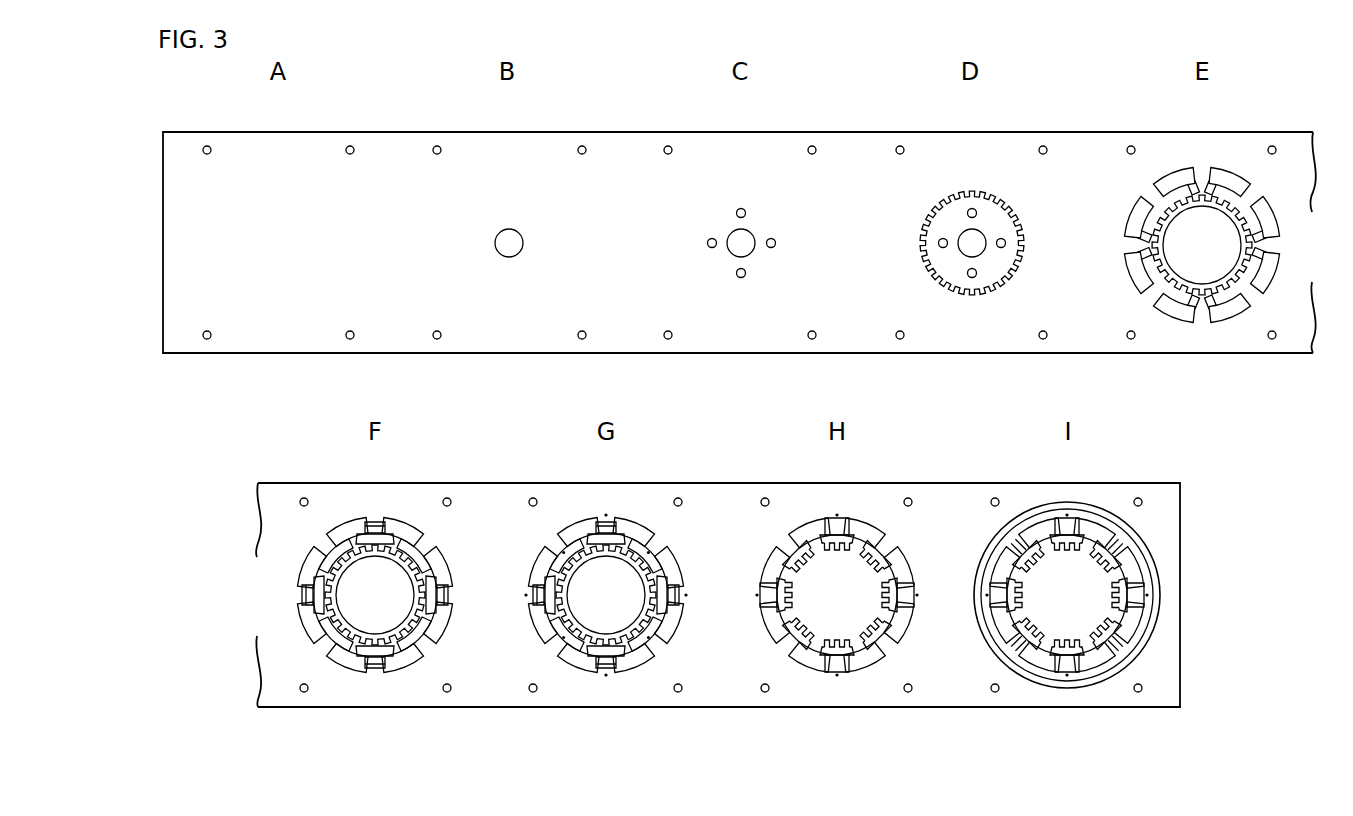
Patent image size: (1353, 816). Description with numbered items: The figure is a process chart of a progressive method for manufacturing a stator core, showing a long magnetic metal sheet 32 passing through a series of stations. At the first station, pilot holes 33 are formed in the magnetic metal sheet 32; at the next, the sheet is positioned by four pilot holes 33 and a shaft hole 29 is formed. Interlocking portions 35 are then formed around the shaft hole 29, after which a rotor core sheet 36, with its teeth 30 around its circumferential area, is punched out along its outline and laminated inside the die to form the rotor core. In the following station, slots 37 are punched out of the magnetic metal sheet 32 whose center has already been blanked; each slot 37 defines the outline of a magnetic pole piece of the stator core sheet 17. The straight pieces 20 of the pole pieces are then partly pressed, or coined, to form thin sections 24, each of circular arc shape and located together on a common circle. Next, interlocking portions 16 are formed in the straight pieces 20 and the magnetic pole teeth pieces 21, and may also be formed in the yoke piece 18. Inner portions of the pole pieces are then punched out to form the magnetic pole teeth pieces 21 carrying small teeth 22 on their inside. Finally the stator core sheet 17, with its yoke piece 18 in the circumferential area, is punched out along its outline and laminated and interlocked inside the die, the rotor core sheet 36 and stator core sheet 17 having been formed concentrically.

The interlocking portions 16 is at (645, 652).
The stator core sheet 17 is at (1154, 530).
The yoke piece 18 is at (1028, 517).
The straight piece 20 is at (1120, 652).
The magnetic pole teeth piece 21 is at (1001, 603).
The small teeth 22 is at (839, 642).
The thin sections 24 is at (376, 667).
The shaft hole 29 is at (509, 258).
The teeth 30 is at (974, 242).
The magnetic metal sheet 32 is at (766, 136).
The pilot holes 33 is at (210, 147).
The interlocking portions 35 is at (710, 239).
The rotor core sheet 36 is at (992, 222).
The slots 37 is at (1228, 176).